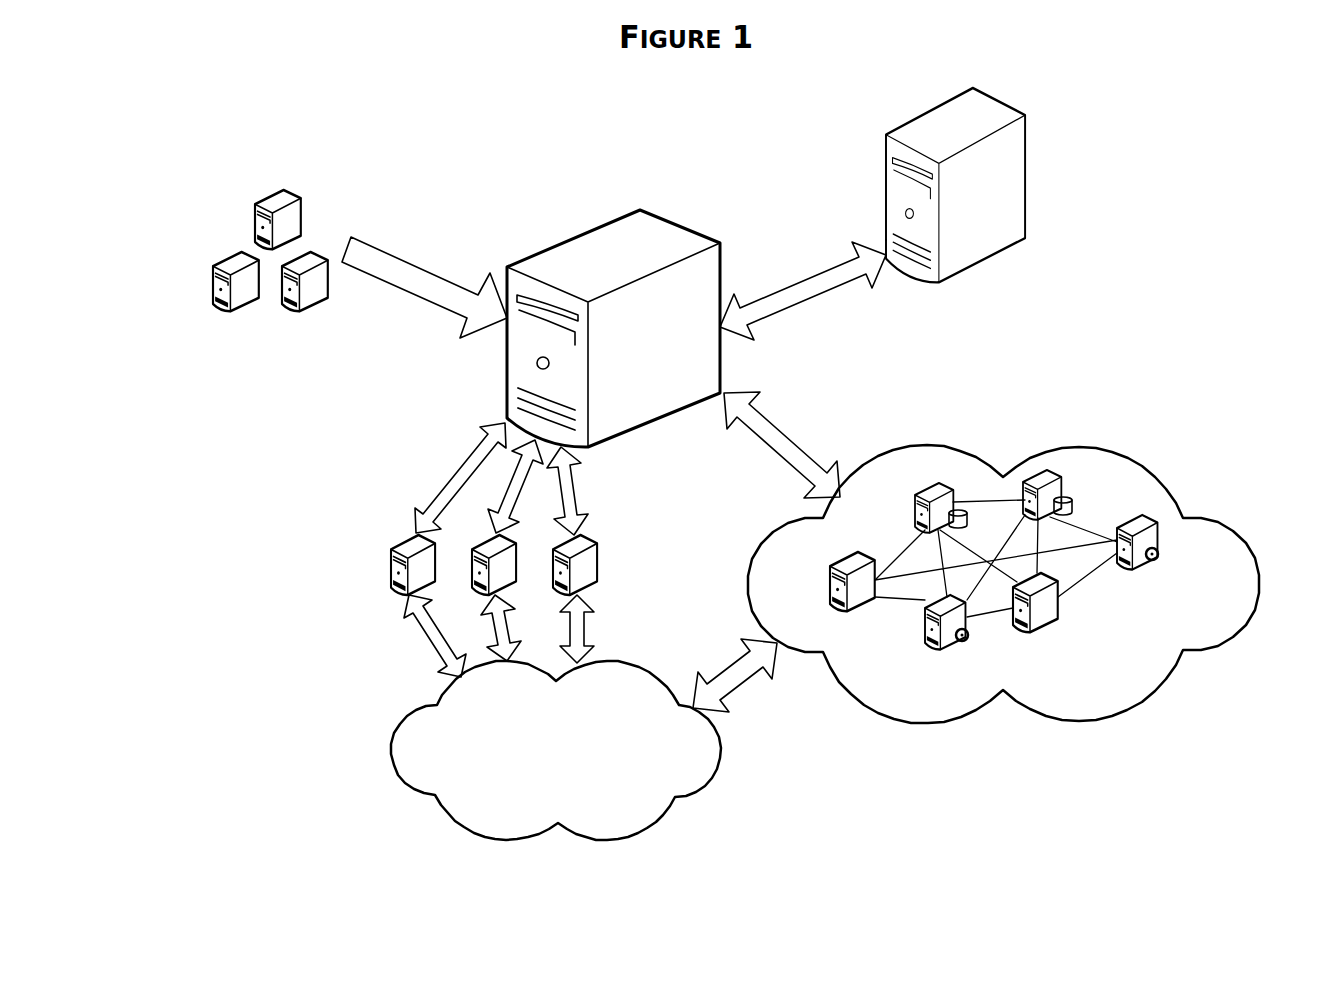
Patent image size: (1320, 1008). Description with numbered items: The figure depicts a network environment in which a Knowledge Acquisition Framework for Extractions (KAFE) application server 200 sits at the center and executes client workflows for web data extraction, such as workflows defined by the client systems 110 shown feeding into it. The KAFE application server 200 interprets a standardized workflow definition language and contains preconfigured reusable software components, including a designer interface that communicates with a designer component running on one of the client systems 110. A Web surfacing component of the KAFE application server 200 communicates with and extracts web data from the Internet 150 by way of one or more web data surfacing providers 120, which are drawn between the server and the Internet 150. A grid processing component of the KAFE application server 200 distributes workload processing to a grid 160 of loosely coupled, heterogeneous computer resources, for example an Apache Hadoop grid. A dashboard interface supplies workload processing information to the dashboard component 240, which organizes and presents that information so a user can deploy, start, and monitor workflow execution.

The client systems 110 is at (220, 232).
The KAFE application server 200 is at (713, 208).
The dashboard component 240 is at (1054, 185).
The web data surfacing providers 120 is at (409, 582).
The Internet 150 is at (577, 797).
The grid 160 is at (1043, 453).